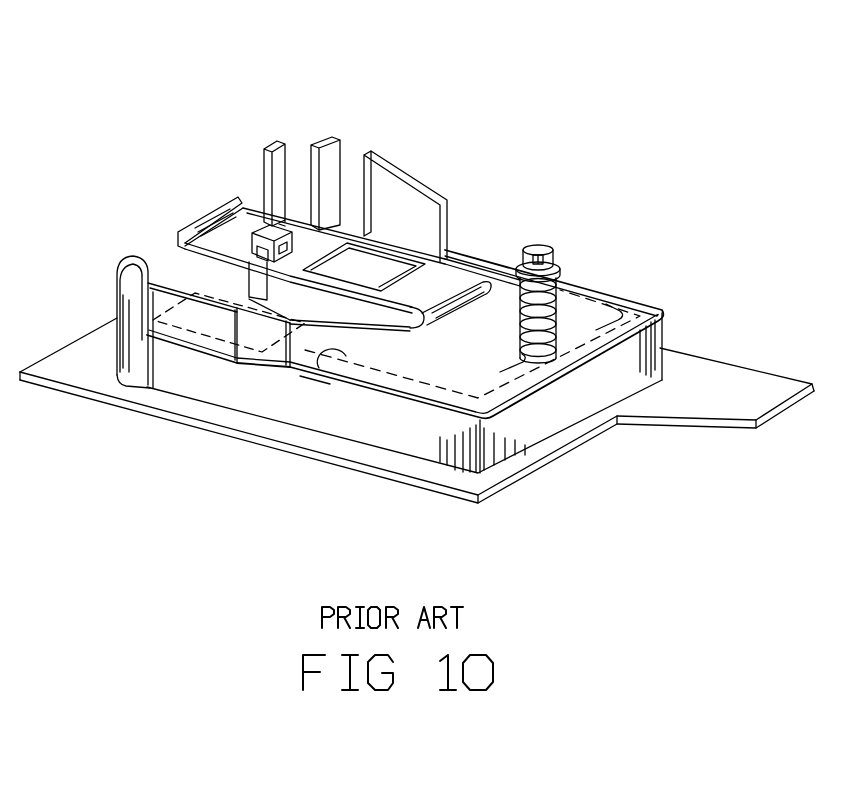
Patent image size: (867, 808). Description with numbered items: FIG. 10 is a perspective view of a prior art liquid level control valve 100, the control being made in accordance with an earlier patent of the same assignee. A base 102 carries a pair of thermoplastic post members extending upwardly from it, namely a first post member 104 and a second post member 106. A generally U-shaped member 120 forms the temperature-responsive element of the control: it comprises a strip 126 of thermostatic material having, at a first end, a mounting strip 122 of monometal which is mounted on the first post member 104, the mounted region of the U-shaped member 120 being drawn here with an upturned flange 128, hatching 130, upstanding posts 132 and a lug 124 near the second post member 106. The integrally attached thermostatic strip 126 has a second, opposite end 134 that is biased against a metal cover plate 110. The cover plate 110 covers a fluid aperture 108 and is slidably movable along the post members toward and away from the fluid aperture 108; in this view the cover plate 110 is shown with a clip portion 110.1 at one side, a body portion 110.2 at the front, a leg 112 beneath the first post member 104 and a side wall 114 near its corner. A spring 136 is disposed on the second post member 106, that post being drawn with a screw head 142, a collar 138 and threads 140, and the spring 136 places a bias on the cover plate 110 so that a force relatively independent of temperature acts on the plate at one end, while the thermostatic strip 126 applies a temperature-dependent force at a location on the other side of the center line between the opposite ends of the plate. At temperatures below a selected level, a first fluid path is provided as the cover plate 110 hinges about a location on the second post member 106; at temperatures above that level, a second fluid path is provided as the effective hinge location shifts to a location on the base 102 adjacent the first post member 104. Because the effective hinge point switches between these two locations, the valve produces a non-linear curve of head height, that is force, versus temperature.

The connector assembly 100 is at (257, 72).
The base 102 is at (648, 350).
The first member of the pair of post members 104 is at (268, 226).
The second member of the pair of post members 106 is at (591, 261).
The fluid aperture 108 is at (320, 358).
The cover plate 110 is at (493, 386).
The housing clip portion 110.1 is at (183, 277).
The housing body portion 110.2 is at (443, 392).
The terminal leg 112 is at (255, 298).
The housing side wall 114 is at (567, 363).
The U-shaped member 120 is at (406, 238).
The mounting strip 122 is at (305, 248).
The bracket lug 124 is at (457, 263).
The strip of thermostatic material 126 is at (414, 329).
The bracket flange 128 is at (190, 231).
The flange hatching 130 is at (258, 243).
The bracket posts 132 is at (292, 222).
The second opposite end 134 is at (356, 328).
The spring 136 is at (548, 341).
The screw collar 138 is at (558, 266).
The screw threads 140 is at (562, 270).
The screw head 142 is at (543, 266).